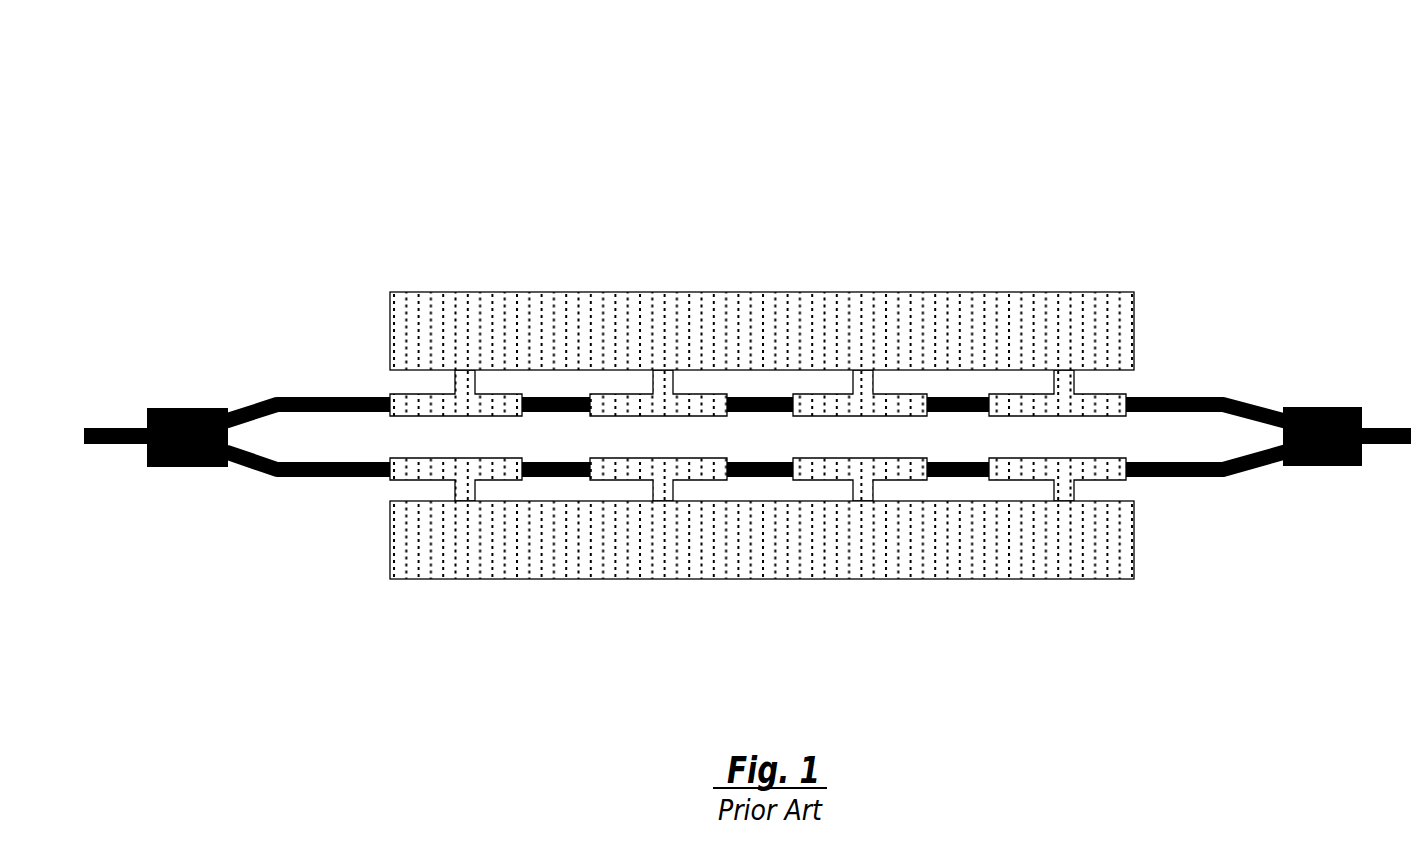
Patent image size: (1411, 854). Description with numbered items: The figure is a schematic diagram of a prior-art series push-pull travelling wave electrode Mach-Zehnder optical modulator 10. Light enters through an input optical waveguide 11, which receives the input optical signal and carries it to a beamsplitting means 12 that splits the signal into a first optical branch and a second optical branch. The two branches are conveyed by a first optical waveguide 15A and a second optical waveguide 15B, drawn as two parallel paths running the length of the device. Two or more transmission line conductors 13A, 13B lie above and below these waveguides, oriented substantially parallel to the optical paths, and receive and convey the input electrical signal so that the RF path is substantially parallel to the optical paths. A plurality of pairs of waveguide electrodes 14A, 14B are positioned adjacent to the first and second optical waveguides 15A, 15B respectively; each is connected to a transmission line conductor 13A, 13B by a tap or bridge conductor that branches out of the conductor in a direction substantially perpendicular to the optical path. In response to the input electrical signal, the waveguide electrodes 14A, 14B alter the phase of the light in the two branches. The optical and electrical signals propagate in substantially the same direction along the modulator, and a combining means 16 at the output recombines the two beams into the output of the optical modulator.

The series push-pull traveling wave electrode Mach-Zehnder optical modulator 10 is at (730, 236).
The input optical waveguide 11 is at (123, 443).
The beamsplitting means 12 is at (208, 408).
The transmission line conductor 13A is at (558, 297).
The transmission line conductor 13B is at (573, 582).
The waveguide electrodes 14A is at (1017, 403).
The waveguide electrodes 14B is at (1037, 468).
The first optical waveguide 15A is at (1180, 400).
The second optical waveguide 15B is at (1185, 475).
The combining means 16 is at (1327, 465).